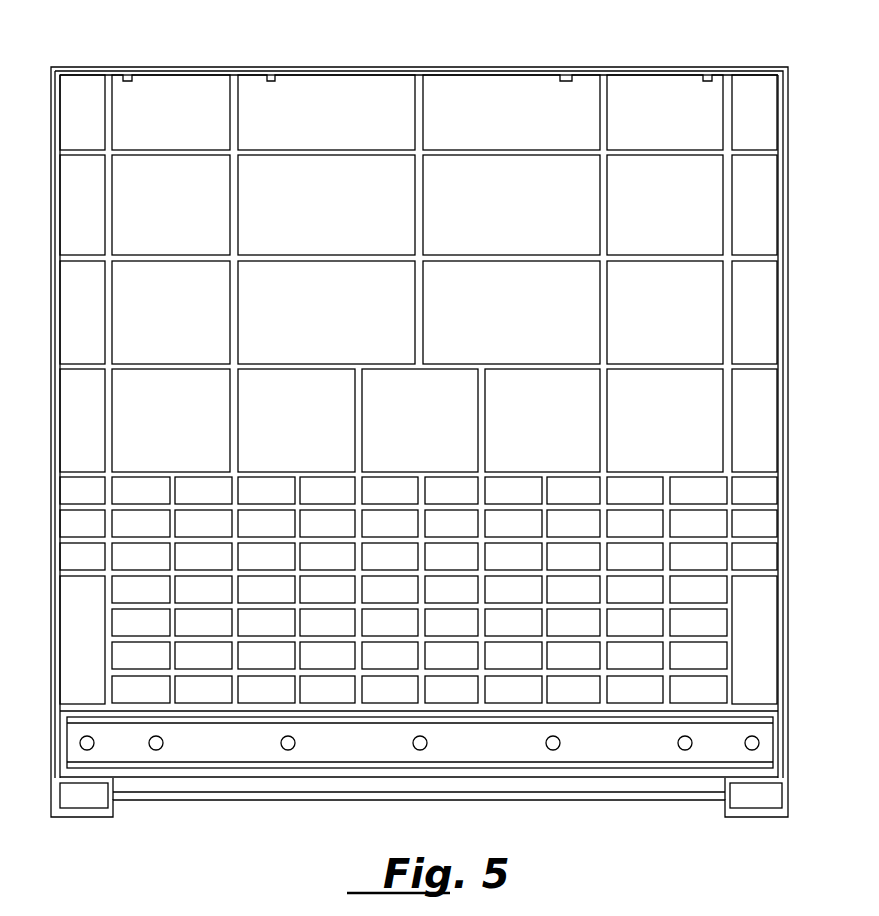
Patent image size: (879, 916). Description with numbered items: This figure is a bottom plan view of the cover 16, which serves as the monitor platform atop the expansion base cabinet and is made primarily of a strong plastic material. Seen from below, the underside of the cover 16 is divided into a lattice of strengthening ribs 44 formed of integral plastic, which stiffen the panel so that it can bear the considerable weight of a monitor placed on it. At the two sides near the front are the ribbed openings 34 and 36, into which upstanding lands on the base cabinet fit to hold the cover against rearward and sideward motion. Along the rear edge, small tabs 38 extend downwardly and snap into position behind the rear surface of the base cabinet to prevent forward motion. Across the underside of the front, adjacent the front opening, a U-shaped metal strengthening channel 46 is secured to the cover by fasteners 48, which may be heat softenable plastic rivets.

The cover 16 is at (788, 114).
The ribbed opening 34 is at (73, 605).
The ribbed opening 36 is at (760, 655).
The small tabs 38 is at (195, 70).
The strengthening ribs 44 is at (545, 492).
The U-shaped metal strengthening channel 46 is at (240, 765).
The fasteners 48 is at (420, 750).